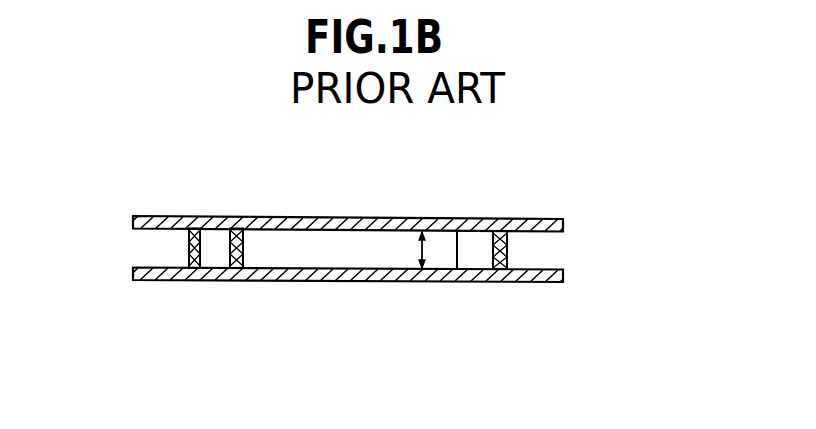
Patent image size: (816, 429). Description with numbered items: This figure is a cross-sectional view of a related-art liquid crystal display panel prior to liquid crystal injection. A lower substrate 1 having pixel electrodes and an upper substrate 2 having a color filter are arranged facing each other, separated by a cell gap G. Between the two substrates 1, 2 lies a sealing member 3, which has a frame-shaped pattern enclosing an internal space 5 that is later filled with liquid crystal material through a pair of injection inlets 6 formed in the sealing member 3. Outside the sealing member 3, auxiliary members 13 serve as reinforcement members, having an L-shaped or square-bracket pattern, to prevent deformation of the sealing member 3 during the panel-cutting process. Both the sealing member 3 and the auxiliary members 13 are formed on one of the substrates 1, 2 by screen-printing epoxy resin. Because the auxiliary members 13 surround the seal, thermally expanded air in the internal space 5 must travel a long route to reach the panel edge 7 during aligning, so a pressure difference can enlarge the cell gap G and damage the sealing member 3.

The lower substrate 1 is at (338, 282).
The upper substrate 2 is at (323, 217).
The sealing member 3 is at (228, 268).
The internal space 5 is at (283, 282).
The injection inlets 6 is at (467, 252).
The panel edge 7 is at (563, 255).
The auxiliary members 13 is at (186, 268).
The cell gap G is at (407, 250).